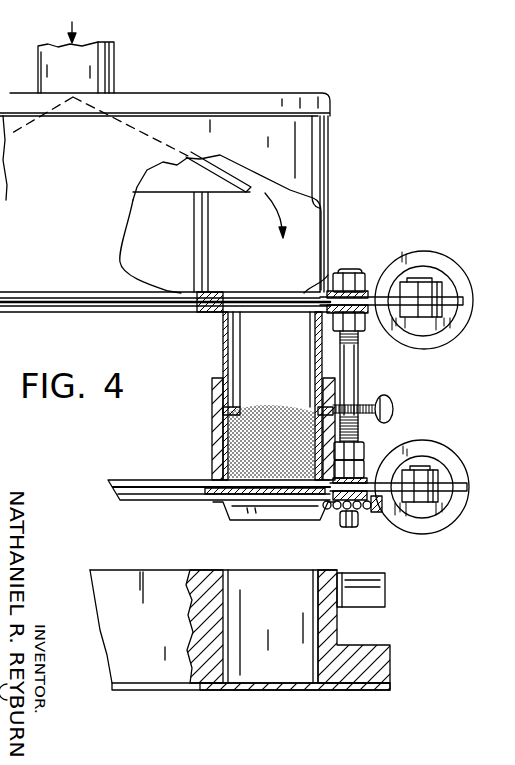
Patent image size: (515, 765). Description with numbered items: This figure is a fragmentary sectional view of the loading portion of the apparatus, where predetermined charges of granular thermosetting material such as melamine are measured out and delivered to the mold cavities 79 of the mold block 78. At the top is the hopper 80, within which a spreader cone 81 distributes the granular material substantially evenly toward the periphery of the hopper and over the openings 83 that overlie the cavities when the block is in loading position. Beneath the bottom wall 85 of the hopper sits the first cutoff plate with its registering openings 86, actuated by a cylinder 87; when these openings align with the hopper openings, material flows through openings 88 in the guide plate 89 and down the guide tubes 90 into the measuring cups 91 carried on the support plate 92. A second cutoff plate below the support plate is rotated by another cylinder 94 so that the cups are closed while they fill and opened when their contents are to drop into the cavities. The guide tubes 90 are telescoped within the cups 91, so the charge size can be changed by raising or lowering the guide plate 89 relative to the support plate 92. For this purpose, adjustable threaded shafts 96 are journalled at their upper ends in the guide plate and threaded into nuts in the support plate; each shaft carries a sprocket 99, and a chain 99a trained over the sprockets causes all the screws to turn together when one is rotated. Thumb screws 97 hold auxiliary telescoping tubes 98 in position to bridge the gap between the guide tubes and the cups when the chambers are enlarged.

The mold block 78 is at (204, 580).
The cavities 79 is at (321, 584).
The hopper 80 is at (307, 157).
The spreader cone 81 is at (205, 185).
The openings 83 is at (311, 292).
The bottom wall 85 is at (172, 289).
The registering openings 86 is at (328, 275).
The cylinder 87 is at (458, 276).
The openings 88 is at (340, 332).
The guide plate 89 is at (121, 307).
The guide tubes 90 is at (232, 341).
The measuring cups 91 is at (205, 447).
The support plate 92 is at (128, 481).
The cylinder 94 is at (452, 462).
The adjustable threaded shafts 96 is at (352, 379).
The thumb screws 97 is at (393, 407).
The auxiliary telescoping tubes 98 is at (214, 412).
The sprocket 99 is at (364, 518).
The chain 99a is at (376, 503).